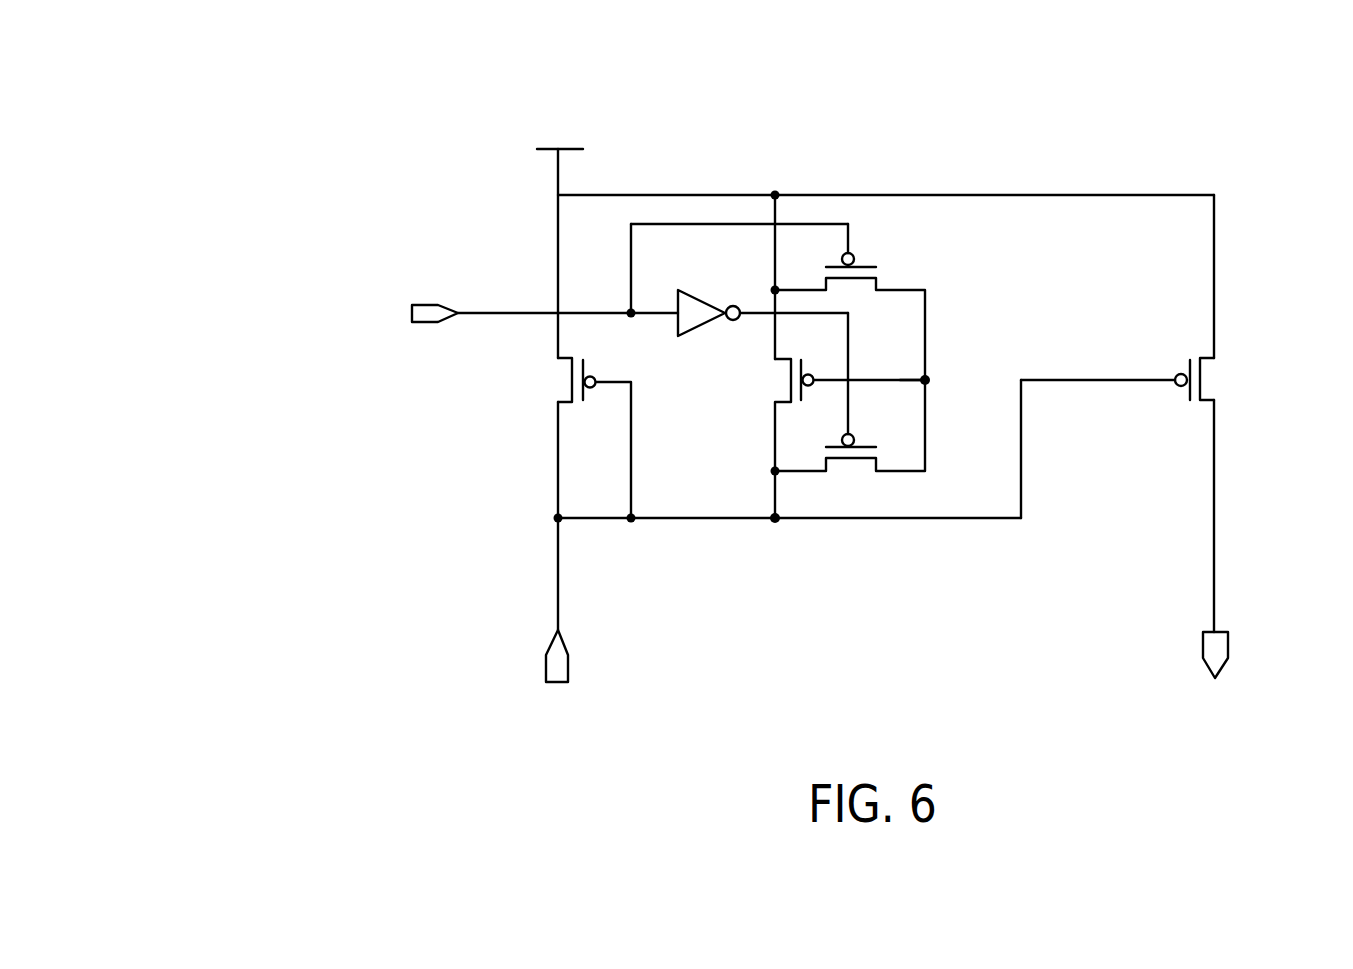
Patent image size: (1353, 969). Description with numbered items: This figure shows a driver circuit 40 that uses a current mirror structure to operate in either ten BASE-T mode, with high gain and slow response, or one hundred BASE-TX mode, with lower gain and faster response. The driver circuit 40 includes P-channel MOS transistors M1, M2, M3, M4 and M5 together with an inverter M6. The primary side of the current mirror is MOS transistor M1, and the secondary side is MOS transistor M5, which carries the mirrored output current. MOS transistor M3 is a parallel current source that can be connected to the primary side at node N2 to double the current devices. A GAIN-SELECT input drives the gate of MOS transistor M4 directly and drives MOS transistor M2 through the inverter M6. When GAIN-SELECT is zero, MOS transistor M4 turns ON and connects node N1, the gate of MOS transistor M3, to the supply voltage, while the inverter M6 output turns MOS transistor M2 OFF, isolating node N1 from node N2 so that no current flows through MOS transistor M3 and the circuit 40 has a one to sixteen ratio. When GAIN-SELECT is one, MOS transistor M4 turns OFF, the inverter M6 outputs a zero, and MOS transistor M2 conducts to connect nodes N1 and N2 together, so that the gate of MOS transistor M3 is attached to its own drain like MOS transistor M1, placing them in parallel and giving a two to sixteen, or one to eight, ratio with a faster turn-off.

The driver circuit 40 is at (855, 142).
The P-channel MOS transistor M1 is at (554, 379).
The P-channel MOS transistor M2 is at (851, 466).
The P-channel MOS transistor M3 is at (773, 377).
The P-channel MOS transistor M4 is at (888, 270).
The P-channel MOS transistor M5 is at (1212, 377).
The inverter M6 is at (697, 301).
The node N1 is at (932, 374).
The node N2 is at (773, 530).